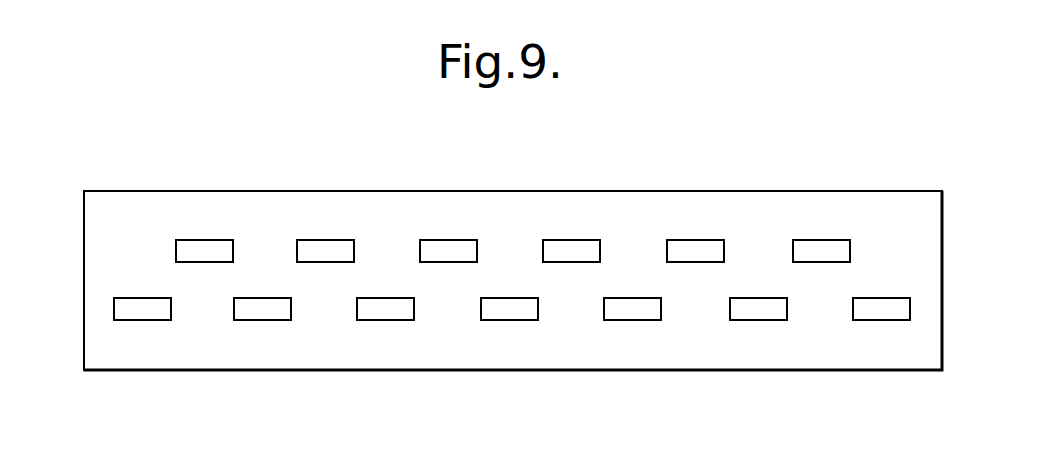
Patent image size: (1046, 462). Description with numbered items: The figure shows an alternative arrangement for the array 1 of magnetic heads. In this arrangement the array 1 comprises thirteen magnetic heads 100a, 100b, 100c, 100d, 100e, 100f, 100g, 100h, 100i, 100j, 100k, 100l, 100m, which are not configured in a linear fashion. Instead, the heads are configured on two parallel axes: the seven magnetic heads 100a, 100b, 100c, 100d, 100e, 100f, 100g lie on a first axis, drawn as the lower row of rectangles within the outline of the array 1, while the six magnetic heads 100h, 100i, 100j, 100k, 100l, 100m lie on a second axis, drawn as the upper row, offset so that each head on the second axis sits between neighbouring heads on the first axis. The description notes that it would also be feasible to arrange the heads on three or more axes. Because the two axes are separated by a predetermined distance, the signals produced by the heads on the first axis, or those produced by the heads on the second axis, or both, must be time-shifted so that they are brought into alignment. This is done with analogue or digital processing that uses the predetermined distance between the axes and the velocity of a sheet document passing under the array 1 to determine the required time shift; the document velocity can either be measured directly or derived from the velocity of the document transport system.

The array of magnetic heads 1 is at (86, 191).
The magnetic head 100a is at (140, 312).
The magnetic head 100b is at (263, 312).
The magnetic head 100c is at (385, 312).
The magnetic head 100d is at (512, 312).
The magnetic head 100e is at (633, 312).
The magnetic head 100f is at (757, 312).
The magnetic head 100g is at (882, 312).
The magnetic head 100h is at (204, 252).
The magnetic head 100i is at (329, 252).
The magnetic head 100j is at (450, 252).
The magnetic head 100k is at (570, 252).
The magnetic head 100l is at (700, 252).
The magnetic head 100m is at (820, 252).